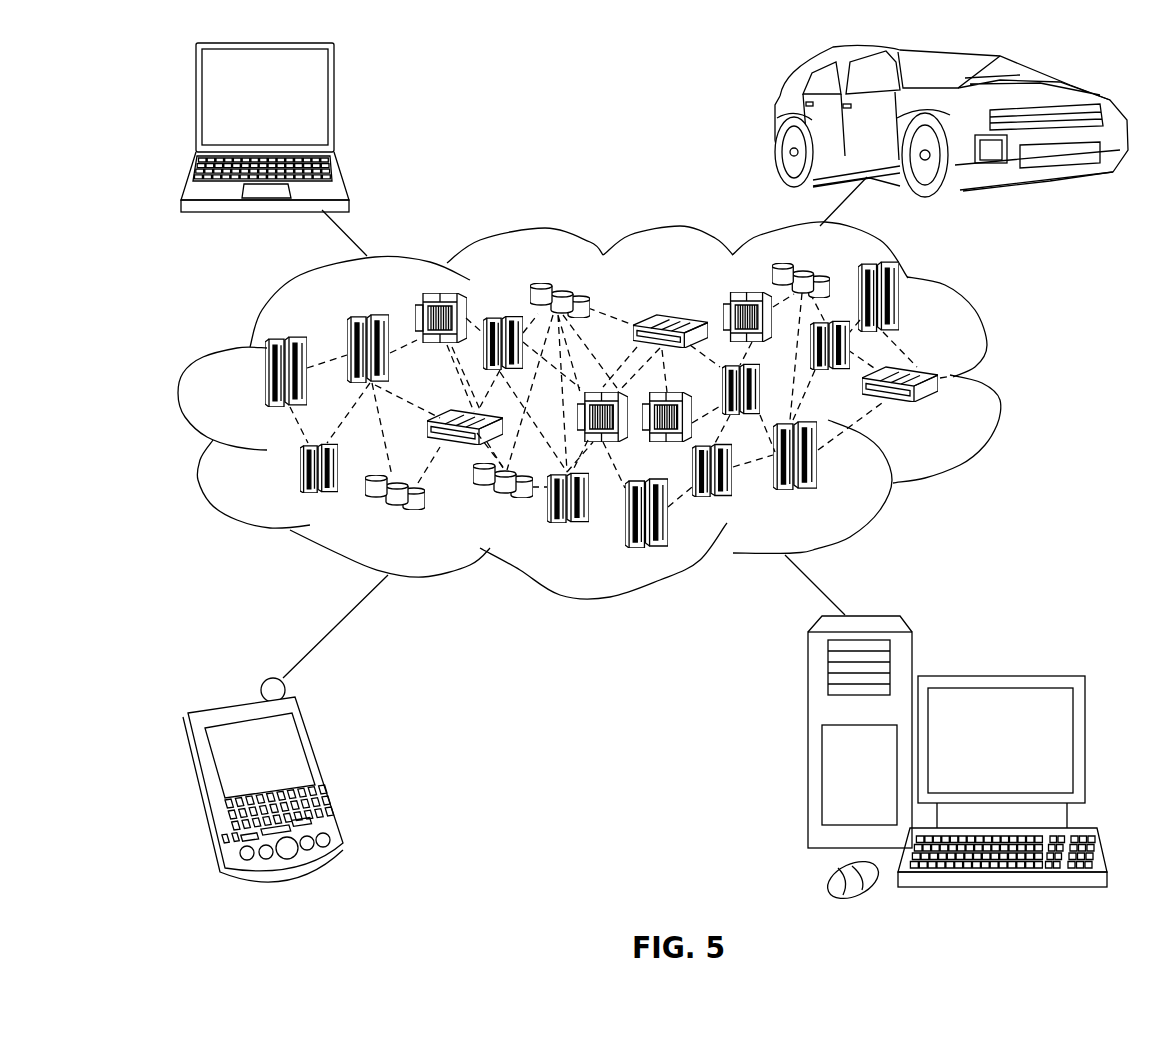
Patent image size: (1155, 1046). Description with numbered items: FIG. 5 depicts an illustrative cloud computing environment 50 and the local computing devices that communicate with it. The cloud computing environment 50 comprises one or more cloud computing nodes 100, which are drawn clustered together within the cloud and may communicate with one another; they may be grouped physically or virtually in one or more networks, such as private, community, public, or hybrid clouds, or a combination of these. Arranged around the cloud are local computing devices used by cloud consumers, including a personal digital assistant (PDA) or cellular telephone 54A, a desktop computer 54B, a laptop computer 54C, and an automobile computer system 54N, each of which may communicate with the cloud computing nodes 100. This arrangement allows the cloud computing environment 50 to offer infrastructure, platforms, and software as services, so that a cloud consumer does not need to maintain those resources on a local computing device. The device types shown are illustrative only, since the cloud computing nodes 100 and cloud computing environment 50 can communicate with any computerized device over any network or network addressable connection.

The cloud computing environment 50 is at (998, 383).
The cloud computing nodes 100 is at (942, 412).
The personal digital assistant (PDA) or cellular telephone 54A is at (325, 769).
The desktop computer 54B is at (999, 674).
The laptop computer 54C is at (334, 106).
The automobile computer system 54N is at (776, 121).